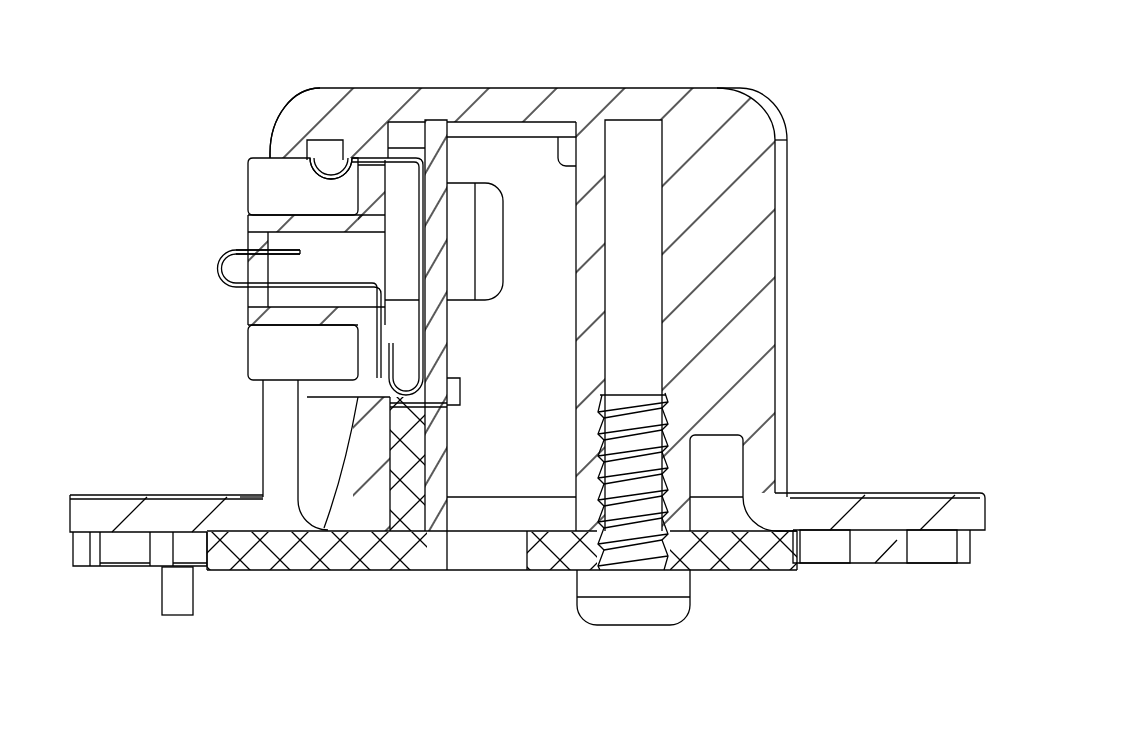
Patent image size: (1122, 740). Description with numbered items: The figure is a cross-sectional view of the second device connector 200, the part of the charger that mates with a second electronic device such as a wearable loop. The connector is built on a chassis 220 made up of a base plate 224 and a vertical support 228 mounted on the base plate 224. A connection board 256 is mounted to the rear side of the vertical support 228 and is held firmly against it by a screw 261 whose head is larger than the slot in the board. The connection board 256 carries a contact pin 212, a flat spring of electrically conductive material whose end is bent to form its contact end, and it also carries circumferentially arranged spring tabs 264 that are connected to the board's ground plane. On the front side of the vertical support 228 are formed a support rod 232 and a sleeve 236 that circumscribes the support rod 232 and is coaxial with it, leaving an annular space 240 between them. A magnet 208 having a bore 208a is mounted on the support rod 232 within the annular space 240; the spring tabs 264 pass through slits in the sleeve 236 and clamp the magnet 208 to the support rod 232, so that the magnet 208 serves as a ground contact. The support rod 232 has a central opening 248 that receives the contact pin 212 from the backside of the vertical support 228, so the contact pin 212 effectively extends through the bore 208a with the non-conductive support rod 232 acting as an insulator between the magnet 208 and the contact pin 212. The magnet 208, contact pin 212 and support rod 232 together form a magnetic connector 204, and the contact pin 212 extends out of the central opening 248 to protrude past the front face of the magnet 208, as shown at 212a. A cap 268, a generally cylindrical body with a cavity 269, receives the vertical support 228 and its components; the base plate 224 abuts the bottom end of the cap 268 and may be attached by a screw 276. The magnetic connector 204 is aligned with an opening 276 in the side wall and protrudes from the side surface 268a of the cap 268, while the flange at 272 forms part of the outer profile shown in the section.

The second device connector 200 is at (678, 88).
The magnetic connector 204 is at (244, 188).
The magnet 208 is at (262, 352).
The bore 208a is at (270, 223).
The contact pin 212 is at (238, 280).
The protruding portion of contact pin 212a is at (240, 253).
The chassis 220 is at (752, 572).
The base plate 224 is at (300, 558).
The vertical support 228 is at (408, 517).
The support rod 232 is at (270, 315).
The sleeve 236 is at (335, 148).
The annular space 240 is at (317, 155).
The central opening 248 is at (322, 247).
The connection board 256 is at (437, 508).
The screw 261 is at (470, 183).
The spring tabs 264 is at (362, 160).
The cap 268 is at (792, 318).
The side surface 268a is at (262, 152).
The cavity 269 is at (565, 137).
The mounting flange 272 is at (883, 518).
The screw / opening 276 is at (260, 384).